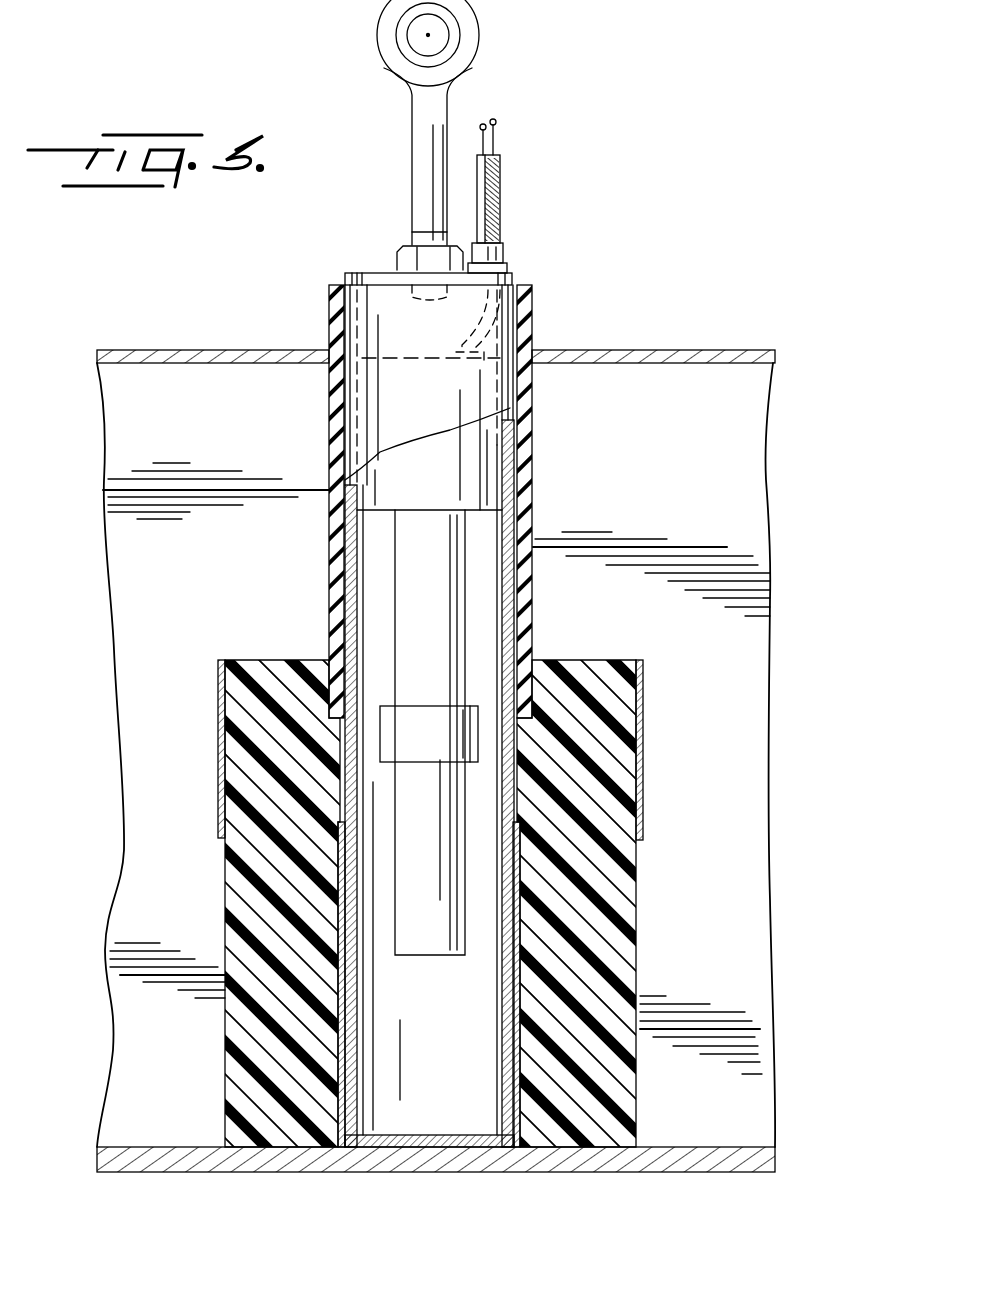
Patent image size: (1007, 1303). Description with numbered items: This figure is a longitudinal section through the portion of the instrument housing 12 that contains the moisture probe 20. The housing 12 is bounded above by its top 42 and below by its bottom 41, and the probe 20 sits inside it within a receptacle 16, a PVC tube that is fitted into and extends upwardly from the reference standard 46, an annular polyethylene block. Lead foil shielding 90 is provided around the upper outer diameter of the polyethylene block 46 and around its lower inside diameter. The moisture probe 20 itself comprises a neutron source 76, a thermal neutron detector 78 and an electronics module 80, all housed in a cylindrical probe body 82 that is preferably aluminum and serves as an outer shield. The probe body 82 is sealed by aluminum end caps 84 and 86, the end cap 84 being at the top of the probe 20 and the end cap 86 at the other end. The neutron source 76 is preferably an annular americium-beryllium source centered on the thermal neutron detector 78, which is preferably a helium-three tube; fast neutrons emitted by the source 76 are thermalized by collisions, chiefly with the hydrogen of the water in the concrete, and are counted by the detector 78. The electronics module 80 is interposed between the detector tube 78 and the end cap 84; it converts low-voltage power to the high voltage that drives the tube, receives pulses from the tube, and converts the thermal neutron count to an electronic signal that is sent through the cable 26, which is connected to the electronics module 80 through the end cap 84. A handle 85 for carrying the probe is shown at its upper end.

The instrument housing 12 is at (803, 423).
The receptacle 16 is at (336, 284).
The moisture probe 20 is at (515, 82).
The cable 26 is at (500, 207).
The bottom 41 is at (674, 1157).
The top 42 is at (670, 352).
The reference standard 46 is at (600, 662).
The neutron source 76 is at (432, 748).
The thermal neutron detector 78 is at (450, 605).
The electronics module 80 is at (446, 484).
The cylindrical probe body 82 is at (527, 662).
The end cap 84 is at (500, 275).
The handle 85 is at (430, 114).
The end cap 86 is at (460, 1148).
The lead foil shielding 90 is at (219, 690).